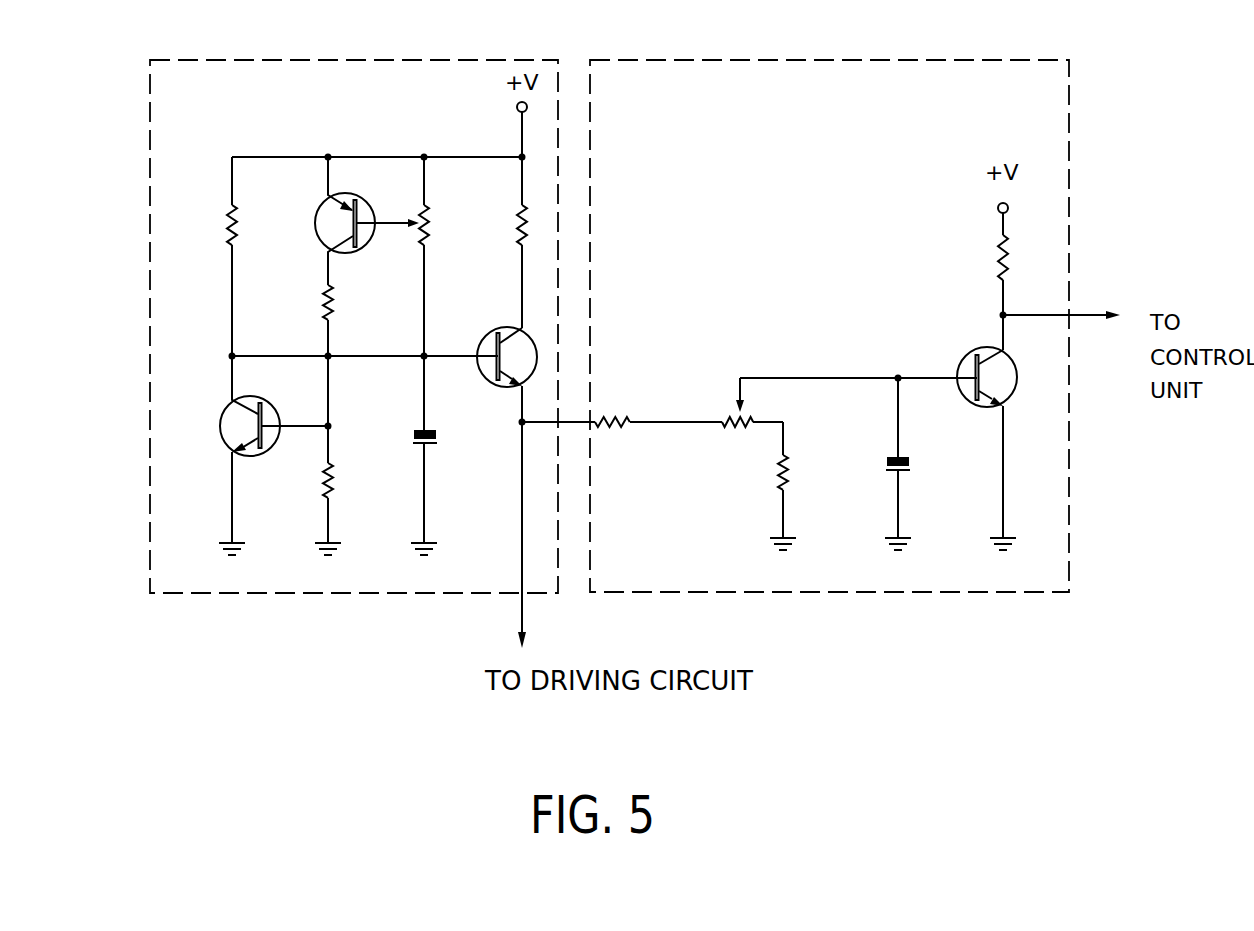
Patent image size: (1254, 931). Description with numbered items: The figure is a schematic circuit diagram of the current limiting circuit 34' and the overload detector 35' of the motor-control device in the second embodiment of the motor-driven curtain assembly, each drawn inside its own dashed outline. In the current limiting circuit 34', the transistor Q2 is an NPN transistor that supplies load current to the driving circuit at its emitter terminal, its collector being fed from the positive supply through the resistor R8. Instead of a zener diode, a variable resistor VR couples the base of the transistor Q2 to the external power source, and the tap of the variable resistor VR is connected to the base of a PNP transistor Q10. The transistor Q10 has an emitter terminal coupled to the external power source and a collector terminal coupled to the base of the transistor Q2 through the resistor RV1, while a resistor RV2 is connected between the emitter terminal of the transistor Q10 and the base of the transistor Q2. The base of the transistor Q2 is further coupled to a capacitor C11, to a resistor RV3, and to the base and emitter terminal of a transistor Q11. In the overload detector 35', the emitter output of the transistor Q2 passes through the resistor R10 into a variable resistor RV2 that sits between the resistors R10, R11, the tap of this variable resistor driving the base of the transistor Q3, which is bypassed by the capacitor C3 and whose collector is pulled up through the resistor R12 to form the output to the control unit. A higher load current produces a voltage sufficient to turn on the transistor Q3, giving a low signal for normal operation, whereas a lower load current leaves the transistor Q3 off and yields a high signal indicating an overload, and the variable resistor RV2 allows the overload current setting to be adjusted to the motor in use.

The current limiting circuit 34' is at (354, 300).
The overload detector 35' is at (829, 296).
The PNP transistor Q10 is at (342, 221).
The transistor Q11 is at (251, 455).
The NPN transistor Q2 is at (507, 487).
The transistor Q3 is at (1009, 448).
The resistor RV1 is at (360, 320).
The resistor / variable resistor RV2 is at (475, 307).
The resistor RV3 is at (354, 455).
The variable resistor VR is at (448, 256).
The resistor R8 is at (540, 242).
The resistor R10 is at (586, 405).
The resistor R11 is at (809, 486).
The resistor R12 is at (1029, 292).
The capacitor C11 is at (450, 455).
The capacitor C3 is at (921, 464).